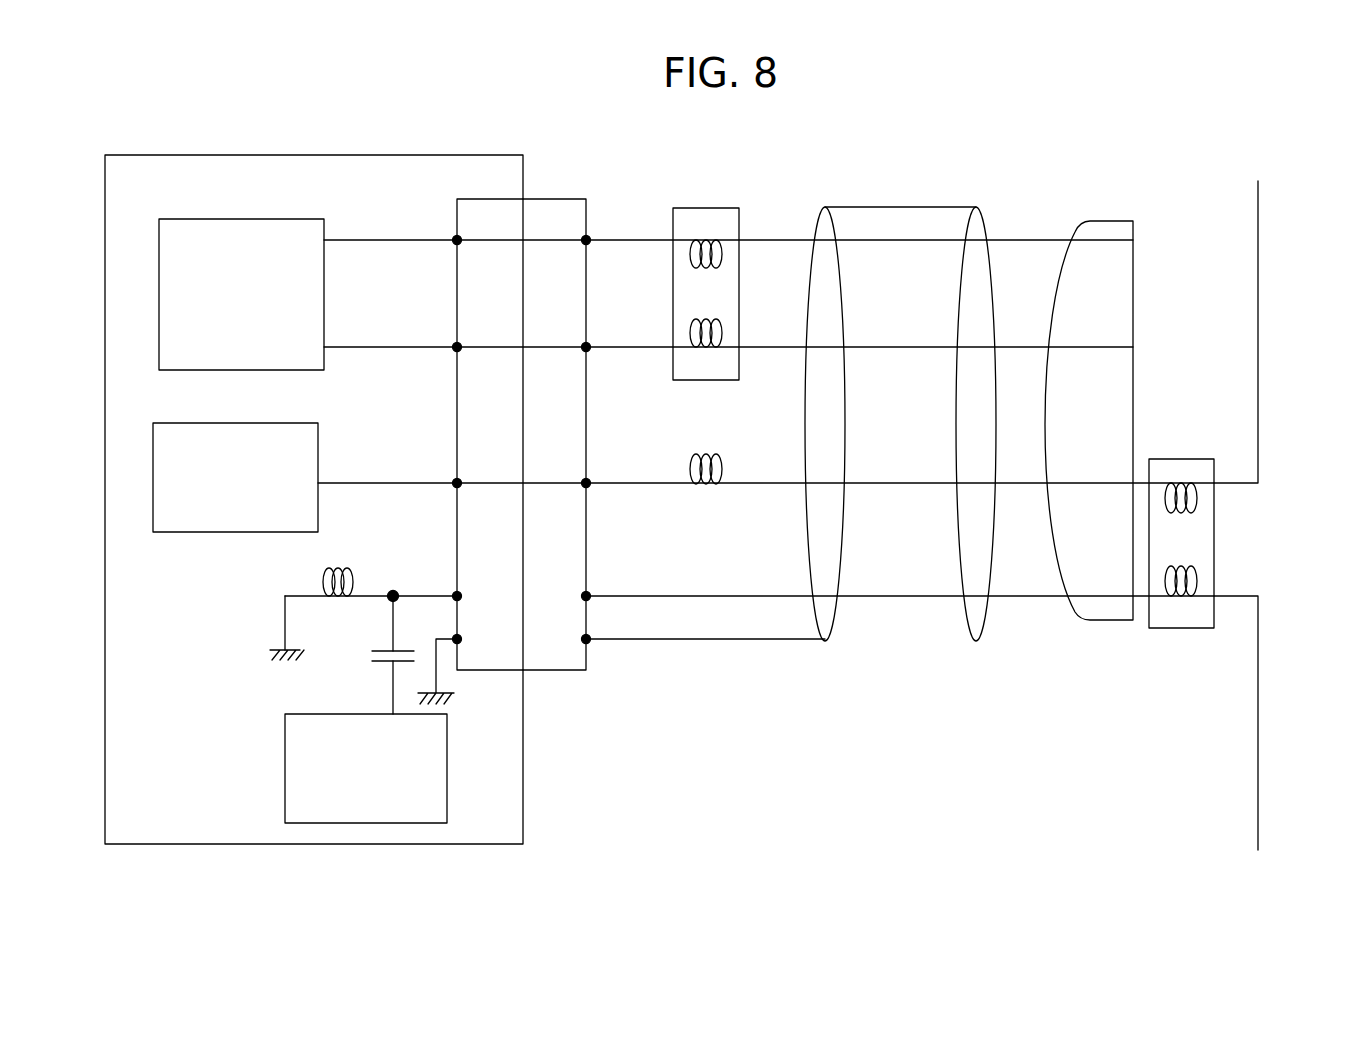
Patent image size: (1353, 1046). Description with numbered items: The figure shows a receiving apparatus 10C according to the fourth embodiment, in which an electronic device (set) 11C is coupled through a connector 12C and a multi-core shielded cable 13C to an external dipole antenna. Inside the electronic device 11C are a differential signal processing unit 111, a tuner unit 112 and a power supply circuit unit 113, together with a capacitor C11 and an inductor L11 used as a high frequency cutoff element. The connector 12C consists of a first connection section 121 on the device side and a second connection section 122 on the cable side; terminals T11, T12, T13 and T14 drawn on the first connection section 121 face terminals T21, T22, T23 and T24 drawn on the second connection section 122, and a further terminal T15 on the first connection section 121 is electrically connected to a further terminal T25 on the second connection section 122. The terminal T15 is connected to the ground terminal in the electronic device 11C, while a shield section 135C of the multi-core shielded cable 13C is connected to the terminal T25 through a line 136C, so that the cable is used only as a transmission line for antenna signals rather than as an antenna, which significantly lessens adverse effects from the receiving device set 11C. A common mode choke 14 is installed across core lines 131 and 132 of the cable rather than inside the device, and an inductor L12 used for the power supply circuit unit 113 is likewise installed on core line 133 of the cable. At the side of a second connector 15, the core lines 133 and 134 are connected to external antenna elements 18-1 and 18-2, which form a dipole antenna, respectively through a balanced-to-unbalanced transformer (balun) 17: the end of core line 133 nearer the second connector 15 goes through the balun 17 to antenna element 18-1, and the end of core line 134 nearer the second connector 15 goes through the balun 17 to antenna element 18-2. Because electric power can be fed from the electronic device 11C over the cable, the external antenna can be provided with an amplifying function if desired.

The receiving apparatus 10C is at (1025, 836).
The electronic device (set) 11C is at (523, 757).
The differential signal processing unit 111 is at (250, 219).
The tuner unit 112 is at (285, 768).
The power supply circuit unit 113 is at (236, 532).
The connector 12C is at (531, 390).
The first connection section 121 is at (478, 197).
The second connection section 122 is at (550, 183).
The multi-core shielded cable 13C is at (900, 466).
The core line 131 is at (905, 240).
The core line 132 is at (903, 347).
The core line 133 is at (905, 483).
The core line 134 is at (905, 596).
The shield section 135C is at (825, 641).
The line 136C is at (703, 640).
The common mode choke 14 is at (706, 208).
The second connector 15 is at (1110, 621).
The balanced-to-unbalanced transformer (balun) 17 is at (1214, 530).
The antenna element 18-1 is at (1258, 325).
The antenna element 18-2 is at (1258, 740).
The inductor L11 is at (345, 568).
The inductor L12 is at (704, 455).
The capacitor C11 is at (372, 656).
The terminal T11 is at (460, 240).
The terminal T12 is at (460, 347).
The terminal T13 is at (460, 483).
The terminal T14 is at (460, 596).
The terminal T15 is at (460, 639).
The terminal T21 is at (588, 240).
The terminal T22 is at (588, 347).
The terminal T23 is at (588, 483).
The terminal T24 is at (588, 596).
The terminal T25 is at (588, 639).